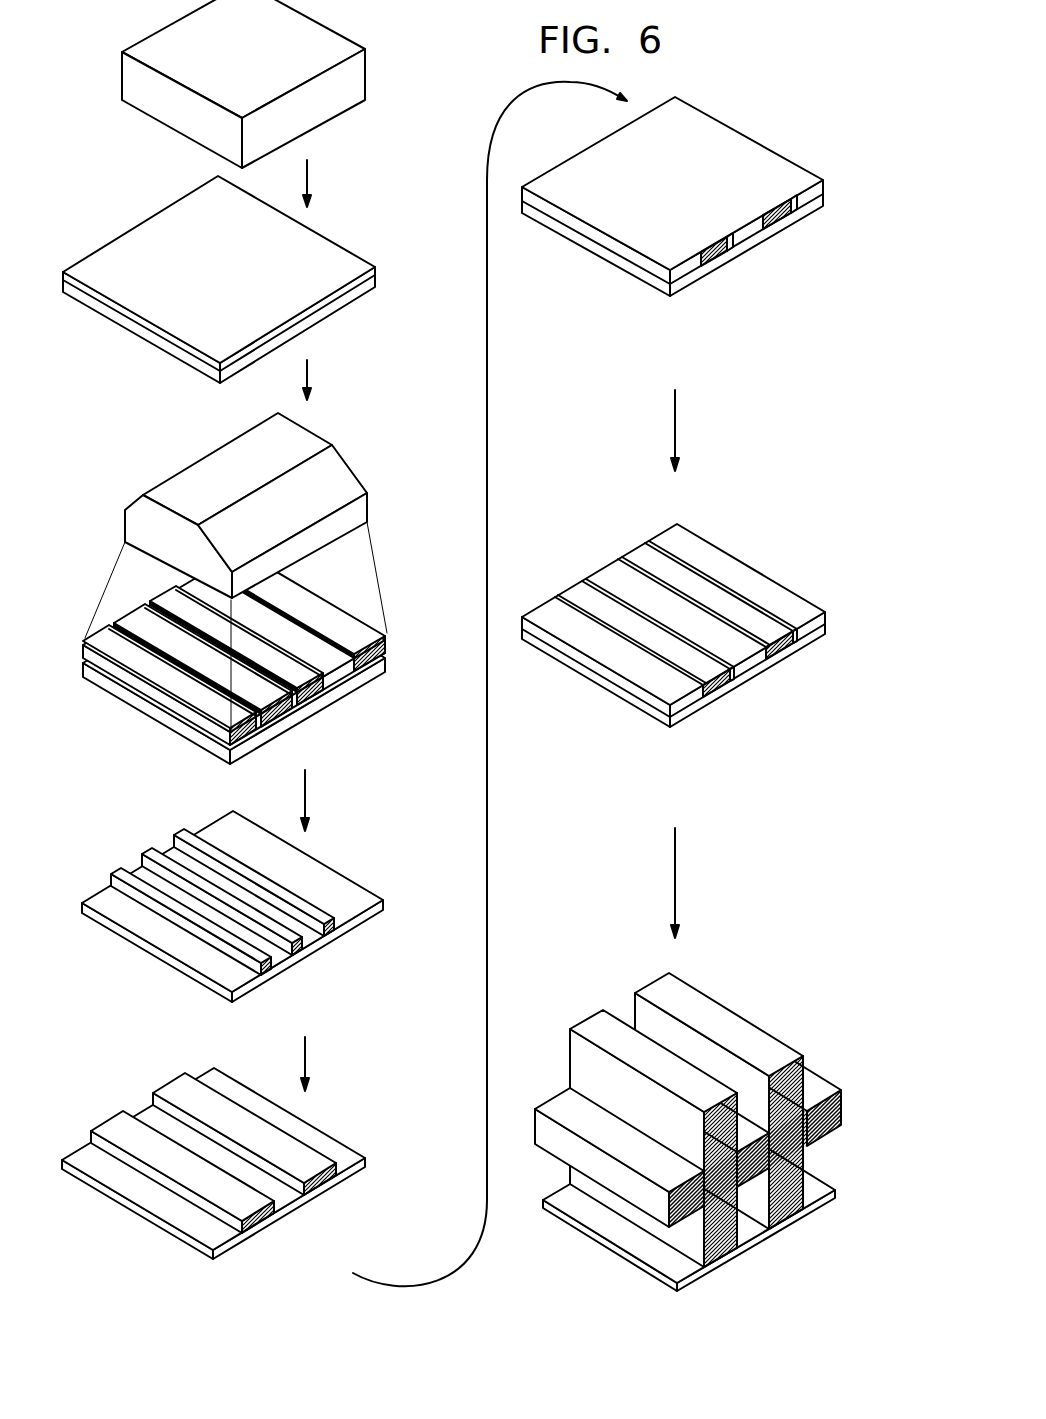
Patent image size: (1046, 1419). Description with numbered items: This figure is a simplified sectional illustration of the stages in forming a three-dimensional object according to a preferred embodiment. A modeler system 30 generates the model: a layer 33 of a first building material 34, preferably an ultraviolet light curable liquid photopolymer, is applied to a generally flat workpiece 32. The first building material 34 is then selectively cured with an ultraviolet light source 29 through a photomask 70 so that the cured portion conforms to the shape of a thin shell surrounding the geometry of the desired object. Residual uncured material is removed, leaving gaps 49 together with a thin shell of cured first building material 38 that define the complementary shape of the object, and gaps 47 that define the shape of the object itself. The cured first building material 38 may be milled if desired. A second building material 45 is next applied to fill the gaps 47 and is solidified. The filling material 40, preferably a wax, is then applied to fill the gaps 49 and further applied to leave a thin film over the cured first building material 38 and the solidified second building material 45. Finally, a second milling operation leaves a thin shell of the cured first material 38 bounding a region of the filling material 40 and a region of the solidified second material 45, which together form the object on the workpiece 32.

The ultraviolet light source 29 is at (343, 487).
The modeler system 30 is at (343, 86).
The workpiece 32 is at (327, 315).
The layer 33 is at (377, 274).
The first building material 34 is at (382, 259).
The cured first building material 38 is at (797, 207).
The filling material 40 is at (735, 138).
The second building material 45 is at (180, 1093).
The gaps 47 is at (121, 857).
The gaps 49 is at (108, 897).
The photomask 70 is at (357, 633).